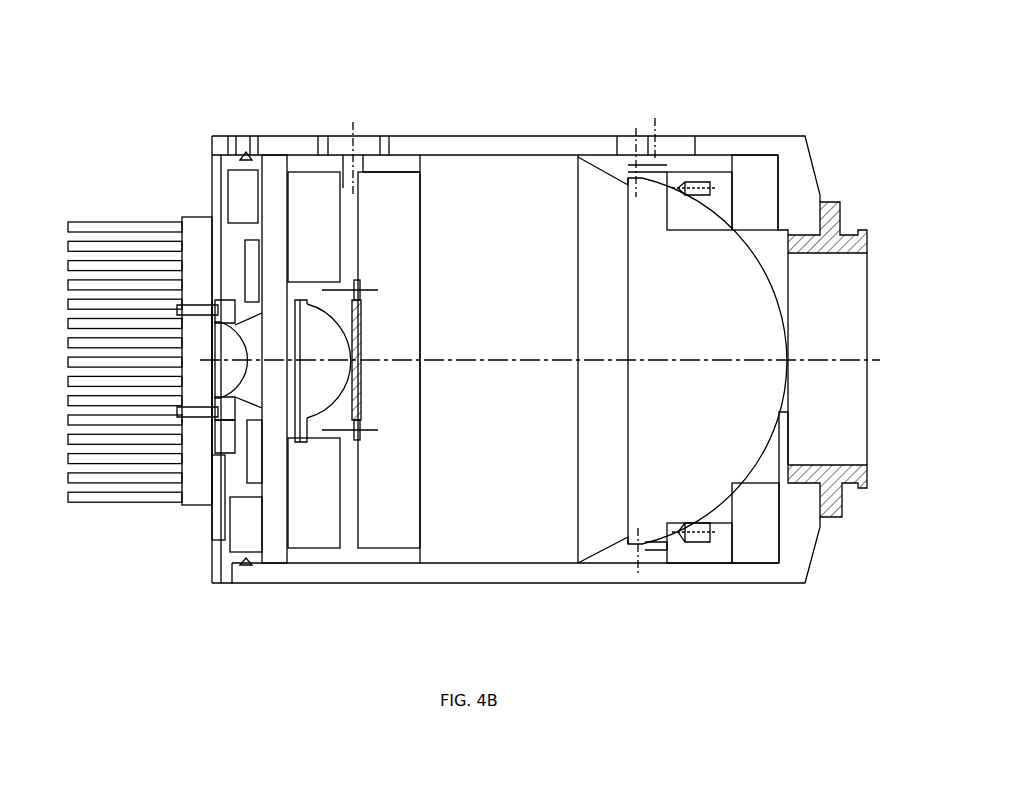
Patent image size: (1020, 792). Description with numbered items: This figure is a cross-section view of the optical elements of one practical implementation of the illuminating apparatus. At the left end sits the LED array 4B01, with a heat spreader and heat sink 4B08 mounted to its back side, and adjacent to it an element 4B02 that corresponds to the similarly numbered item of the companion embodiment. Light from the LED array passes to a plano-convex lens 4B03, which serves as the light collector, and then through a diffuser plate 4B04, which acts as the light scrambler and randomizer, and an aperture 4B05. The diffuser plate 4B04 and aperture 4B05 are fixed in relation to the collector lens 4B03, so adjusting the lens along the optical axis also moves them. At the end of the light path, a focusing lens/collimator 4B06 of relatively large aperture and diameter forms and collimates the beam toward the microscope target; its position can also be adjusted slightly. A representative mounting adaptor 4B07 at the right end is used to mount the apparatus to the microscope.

The LED array 4B01 is at (207, 350).
The item corresponding to item 4A02 4B02 is at (233, 342).
The plano-convex lens 4B03 is at (324, 328).
The diffuser plate 4B04 is at (363, 330).
The aperture 4B05 is at (366, 350).
The focusing lens/collimator 4B06 is at (681, 257).
The mounting adaptor 4B07 is at (832, 200).
The heat spreader and heat sink 4B08 is at (110, 215).